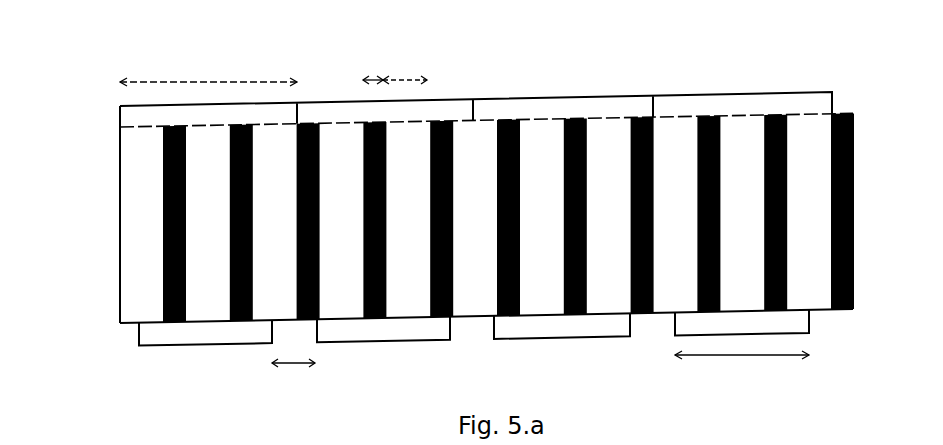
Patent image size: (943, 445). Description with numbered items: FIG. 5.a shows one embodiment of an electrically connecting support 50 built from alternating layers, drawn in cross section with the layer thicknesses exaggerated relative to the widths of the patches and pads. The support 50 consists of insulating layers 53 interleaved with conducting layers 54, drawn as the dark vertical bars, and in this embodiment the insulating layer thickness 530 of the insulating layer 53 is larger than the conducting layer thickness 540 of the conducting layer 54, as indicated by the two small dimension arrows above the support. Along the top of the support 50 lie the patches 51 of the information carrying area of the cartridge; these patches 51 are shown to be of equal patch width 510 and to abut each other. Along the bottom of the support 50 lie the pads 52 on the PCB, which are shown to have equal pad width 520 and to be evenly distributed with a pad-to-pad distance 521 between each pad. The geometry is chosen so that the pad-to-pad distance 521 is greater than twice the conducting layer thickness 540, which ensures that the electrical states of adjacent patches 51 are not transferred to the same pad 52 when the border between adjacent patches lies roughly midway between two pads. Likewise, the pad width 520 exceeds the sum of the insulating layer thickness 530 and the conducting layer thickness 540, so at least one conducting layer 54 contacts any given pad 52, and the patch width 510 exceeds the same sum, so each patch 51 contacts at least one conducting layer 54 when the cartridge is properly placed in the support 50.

The electrically connecting support 50 is at (118, 208).
The patches 51 is at (742, 92).
The pads 52 is at (208, 345).
The insulating layer 53 is at (140, 170).
The conducting layer 54 is at (160, 263).
The width Wpda 510 is at (255, 82).
The width Wcp 520 is at (720, 357).
The distance Diacp 521 is at (293, 365).
The thickness Til 530 is at (419, 75).
The thickness Tcl 540 is at (375, 79).